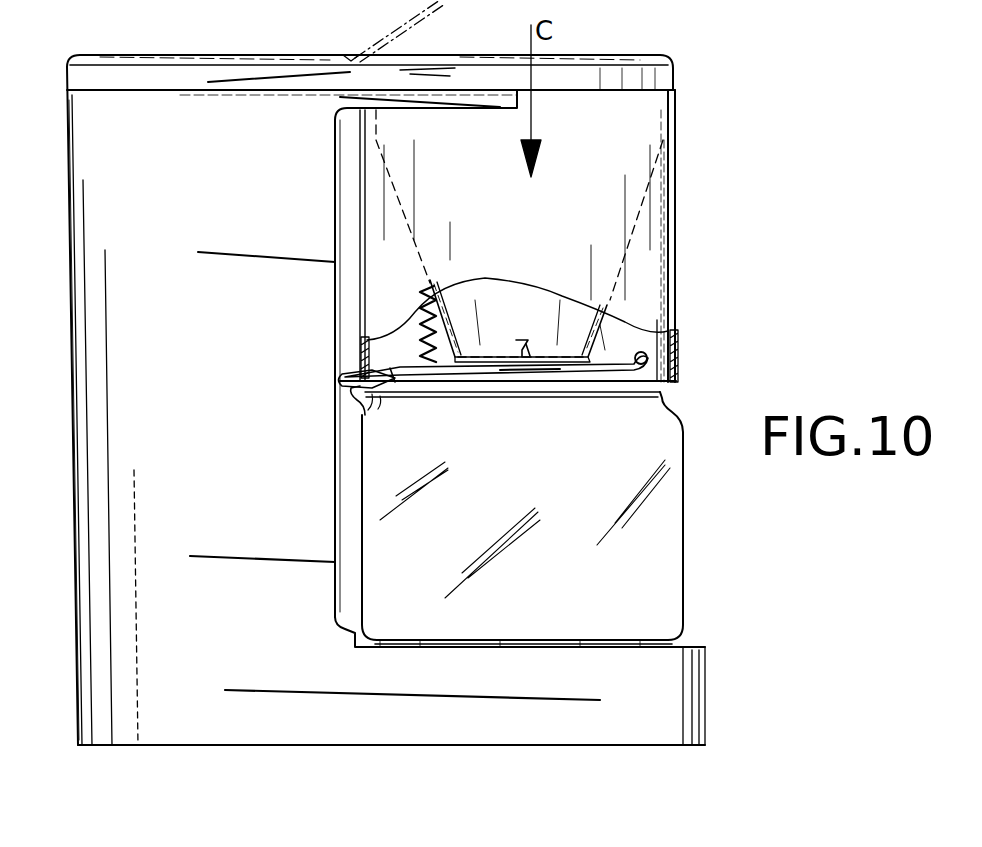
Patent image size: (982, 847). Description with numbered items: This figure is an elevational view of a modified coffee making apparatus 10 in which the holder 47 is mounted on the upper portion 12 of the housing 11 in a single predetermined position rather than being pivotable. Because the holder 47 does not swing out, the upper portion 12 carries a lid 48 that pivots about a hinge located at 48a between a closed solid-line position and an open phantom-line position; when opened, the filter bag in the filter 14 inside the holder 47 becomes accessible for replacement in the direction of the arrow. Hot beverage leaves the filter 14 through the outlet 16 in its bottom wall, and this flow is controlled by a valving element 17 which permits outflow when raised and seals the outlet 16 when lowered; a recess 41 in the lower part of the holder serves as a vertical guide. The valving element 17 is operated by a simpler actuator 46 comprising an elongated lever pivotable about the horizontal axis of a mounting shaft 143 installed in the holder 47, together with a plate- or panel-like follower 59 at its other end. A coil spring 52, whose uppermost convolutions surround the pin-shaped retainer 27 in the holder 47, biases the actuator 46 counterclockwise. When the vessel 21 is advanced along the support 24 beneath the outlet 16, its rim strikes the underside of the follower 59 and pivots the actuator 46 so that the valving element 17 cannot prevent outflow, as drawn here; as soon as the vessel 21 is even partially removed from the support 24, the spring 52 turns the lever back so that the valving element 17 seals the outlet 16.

The apparatus 10 is at (63, 290).
The housing 11 is at (71, 382).
The upper portion 12 is at (650, 78).
The lid 48 is at (637, 54).
The hinge 48a is at (352, 60).
The holder 47 is at (678, 207).
The filter 14 is at (610, 340).
The mounting shaft 143 is at (650, 361).
The retainer 27 is at (432, 283).
The valving element 17 is at (519, 343).
The outlet 16 is at (530, 350).
The recess 41 is at (362, 380).
The follower 59 is at (347, 392).
The coil spring 52 is at (400, 385).
The actuator 46 is at (450, 386).
The vessel 21 is at (690, 553).
The support 24 is at (612, 640).